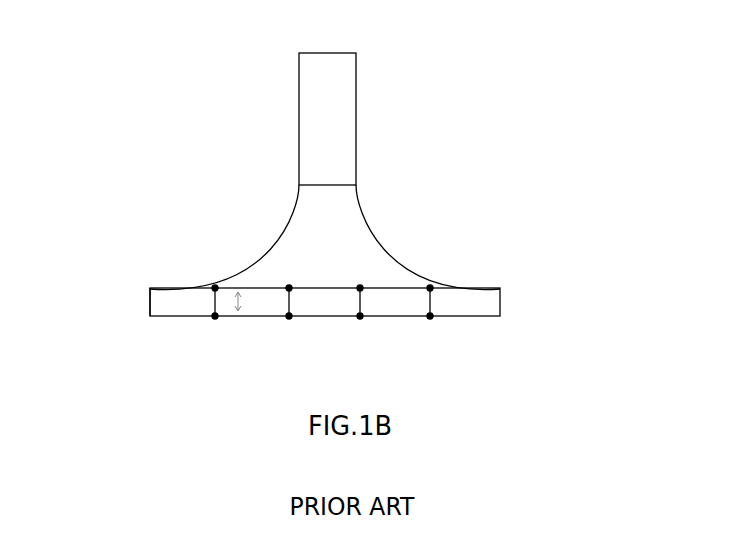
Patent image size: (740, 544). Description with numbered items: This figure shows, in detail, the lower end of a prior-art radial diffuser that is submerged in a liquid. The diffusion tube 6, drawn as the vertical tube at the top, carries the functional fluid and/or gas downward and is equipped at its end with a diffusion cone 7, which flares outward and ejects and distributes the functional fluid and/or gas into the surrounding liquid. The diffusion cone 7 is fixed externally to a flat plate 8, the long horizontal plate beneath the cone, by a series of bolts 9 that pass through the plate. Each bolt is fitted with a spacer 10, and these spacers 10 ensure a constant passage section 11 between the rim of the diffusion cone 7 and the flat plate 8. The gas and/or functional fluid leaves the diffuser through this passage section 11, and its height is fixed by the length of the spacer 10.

The diffusion tube 6 is at (356, 131).
The diffusion cone 7 is at (365, 222).
The flat plate 8 is at (503, 317).
The bolts 9 is at (213, 286).
The spacers 10 is at (215, 301).
The passage section 11 is at (458, 293).